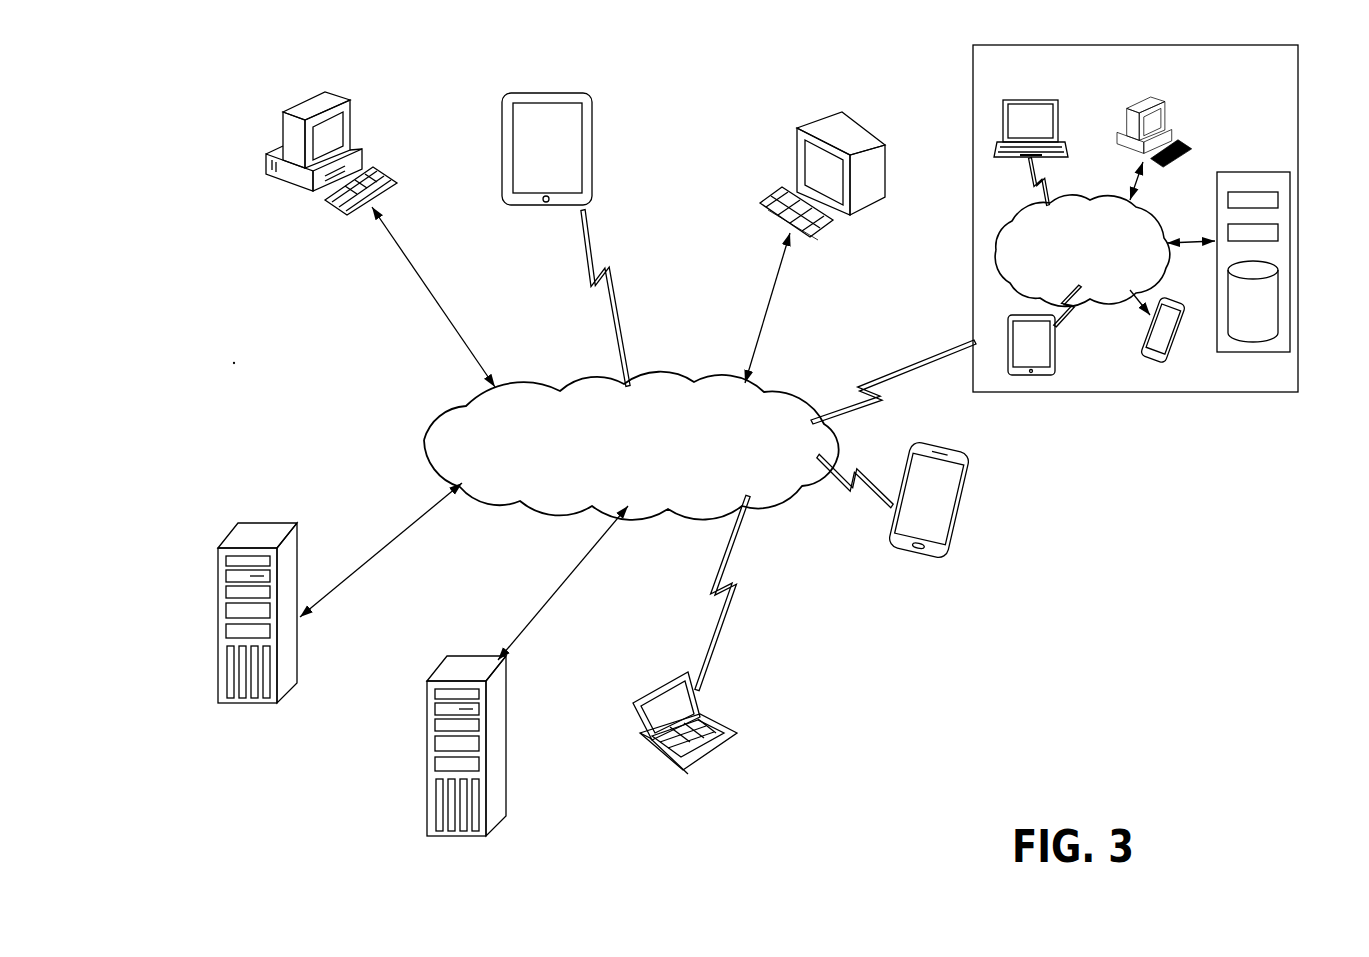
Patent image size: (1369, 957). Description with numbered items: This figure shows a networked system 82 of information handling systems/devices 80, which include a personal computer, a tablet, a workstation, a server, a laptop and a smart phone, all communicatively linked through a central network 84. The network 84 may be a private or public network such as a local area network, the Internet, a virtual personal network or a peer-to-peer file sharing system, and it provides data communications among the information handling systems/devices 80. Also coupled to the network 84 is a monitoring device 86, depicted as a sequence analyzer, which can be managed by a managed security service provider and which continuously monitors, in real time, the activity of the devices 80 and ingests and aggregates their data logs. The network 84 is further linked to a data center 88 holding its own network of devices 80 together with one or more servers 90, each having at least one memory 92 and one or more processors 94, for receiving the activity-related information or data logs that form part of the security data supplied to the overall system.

The information handling systems/devices 80 is at (357, 84).
The networked system 82 is at (234, 363).
The network 84 is at (668, 384).
The monitoring device 86 is at (568, 866).
The data center 88 is at (1209, 394).
The server 90 is at (1232, 172).
The memory 92 is at (1272, 312).
The processors 94 is at (1282, 200).